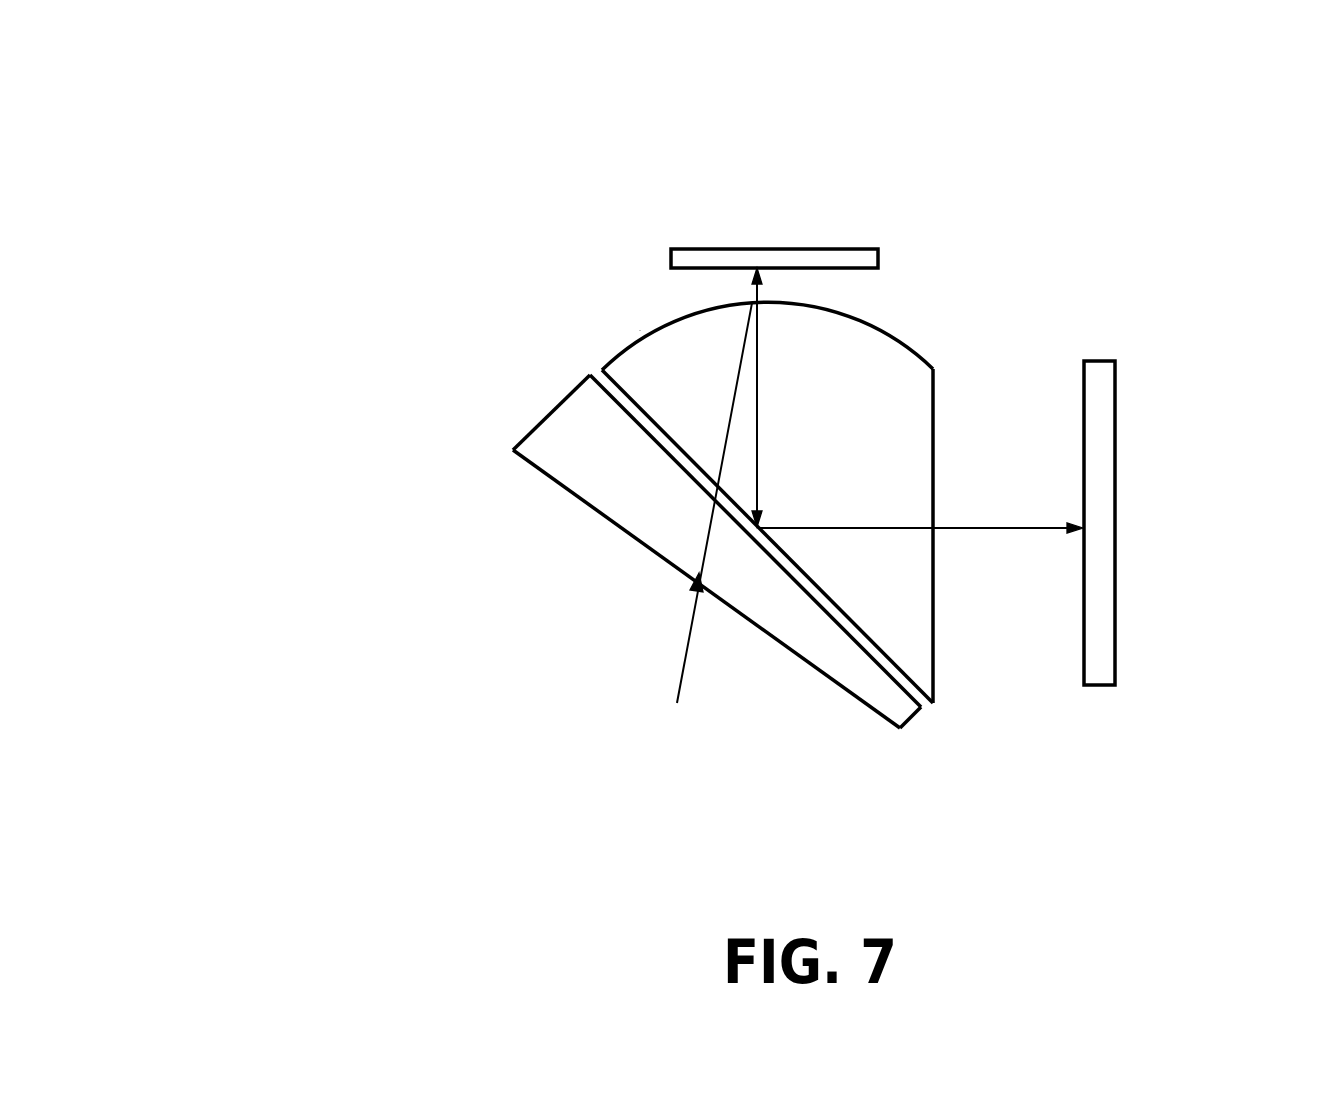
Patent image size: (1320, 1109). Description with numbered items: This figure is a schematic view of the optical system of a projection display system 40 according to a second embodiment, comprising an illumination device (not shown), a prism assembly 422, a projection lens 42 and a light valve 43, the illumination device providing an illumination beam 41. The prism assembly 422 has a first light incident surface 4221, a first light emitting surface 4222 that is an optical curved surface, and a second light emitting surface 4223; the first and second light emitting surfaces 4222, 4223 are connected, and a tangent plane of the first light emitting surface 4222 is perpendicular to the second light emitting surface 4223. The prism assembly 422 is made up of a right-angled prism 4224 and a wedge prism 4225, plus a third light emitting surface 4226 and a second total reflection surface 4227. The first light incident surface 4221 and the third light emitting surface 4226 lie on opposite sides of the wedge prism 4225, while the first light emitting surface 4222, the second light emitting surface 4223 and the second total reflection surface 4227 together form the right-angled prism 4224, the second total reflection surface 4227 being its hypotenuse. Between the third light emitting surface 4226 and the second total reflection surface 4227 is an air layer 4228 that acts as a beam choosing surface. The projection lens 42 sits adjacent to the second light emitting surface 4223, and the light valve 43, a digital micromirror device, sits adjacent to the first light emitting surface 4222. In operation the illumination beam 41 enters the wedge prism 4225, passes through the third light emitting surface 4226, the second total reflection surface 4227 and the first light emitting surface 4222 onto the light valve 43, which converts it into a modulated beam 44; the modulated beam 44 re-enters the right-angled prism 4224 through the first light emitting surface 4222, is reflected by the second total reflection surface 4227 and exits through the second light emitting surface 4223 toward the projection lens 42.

The projection display system 40 is at (305, 208).
The illumination beam 41 is at (680, 657).
The projection lens 42 is at (1115, 398).
The light valve 43 is at (825, 258).
The modulated beam 44 is at (758, 442).
The prism assembly 422 is at (735, 549).
The first light incident surface 4221 is at (577, 493).
The first light emitting surface 4222 is at (843, 317).
The second light emitting surface 4223 is at (935, 683).
The right-angled prism 4224 is at (675, 350).
The wedge prism 4225 is at (862, 680).
The third light emitting surface 4226 is at (603, 390).
The second total reflection surface 4227 is at (877, 643).
The air layer 4228 is at (920, 697).